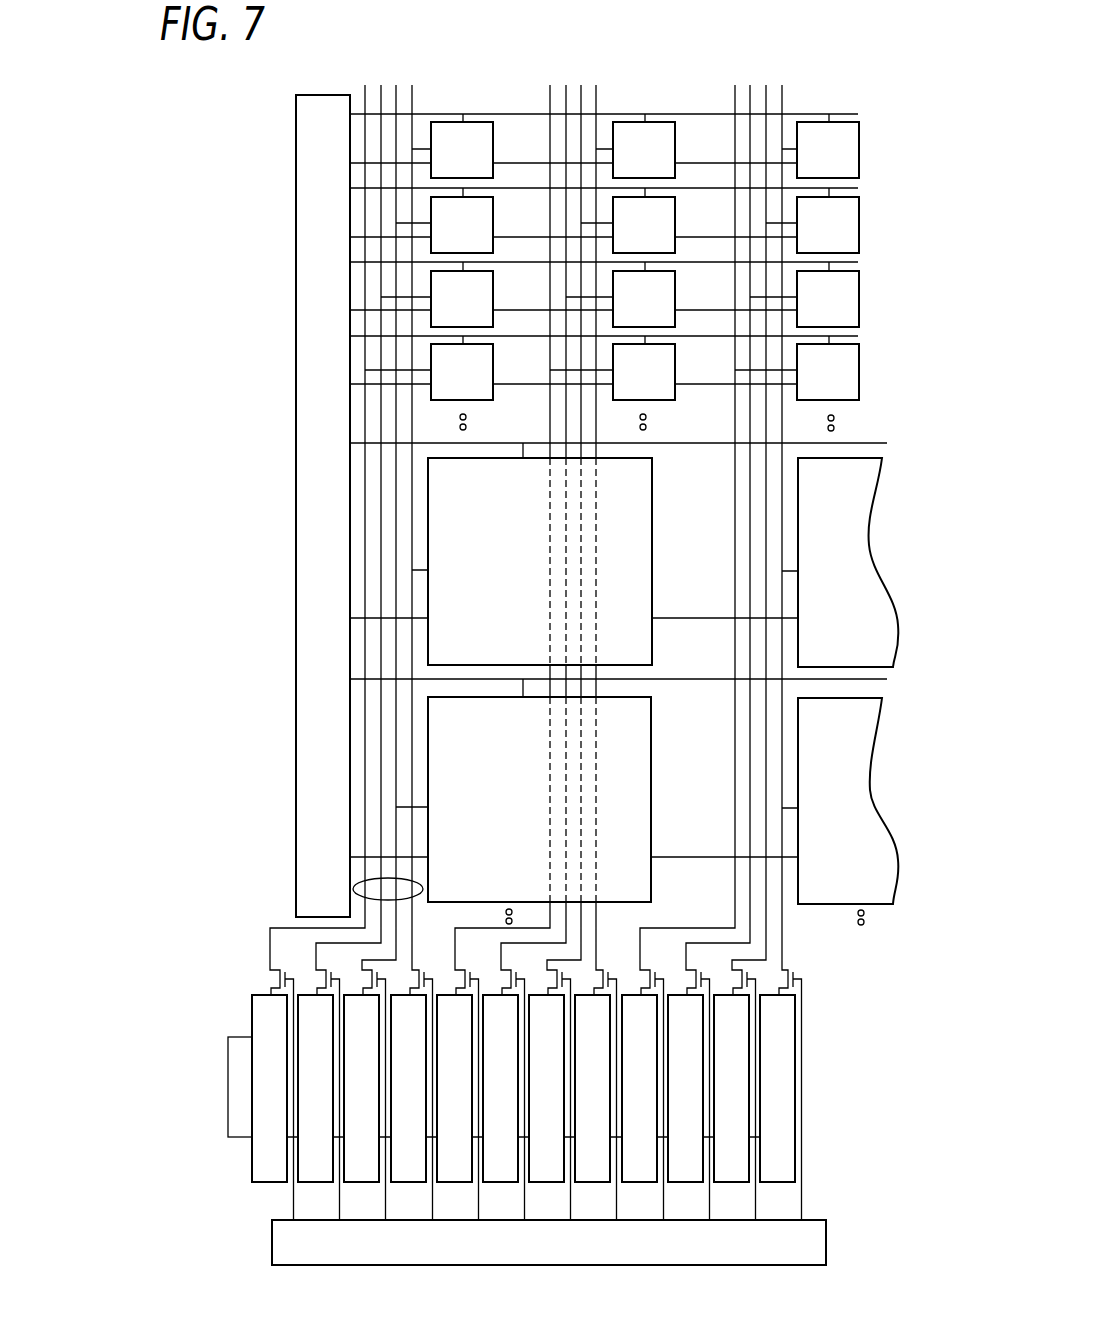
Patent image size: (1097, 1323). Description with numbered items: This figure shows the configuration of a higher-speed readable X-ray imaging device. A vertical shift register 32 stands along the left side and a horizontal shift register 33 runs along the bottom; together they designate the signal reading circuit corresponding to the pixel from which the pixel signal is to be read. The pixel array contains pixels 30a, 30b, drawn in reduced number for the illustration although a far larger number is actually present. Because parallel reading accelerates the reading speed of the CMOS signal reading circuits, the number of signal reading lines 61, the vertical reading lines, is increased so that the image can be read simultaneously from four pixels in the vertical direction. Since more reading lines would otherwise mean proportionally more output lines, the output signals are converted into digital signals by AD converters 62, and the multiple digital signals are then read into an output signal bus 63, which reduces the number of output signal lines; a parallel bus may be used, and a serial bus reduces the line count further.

The vertical shift register 32 is at (305, 193).
The pixels 30a is at (850, 152).
The pixels 30b is at (877, 597).
The signal reading lines 61 is at (353, 889).
The AD converters 62 is at (253, 1007).
The output signal bus 63 is at (228, 1090).
The horizontal shift register 33 is at (826, 1241).